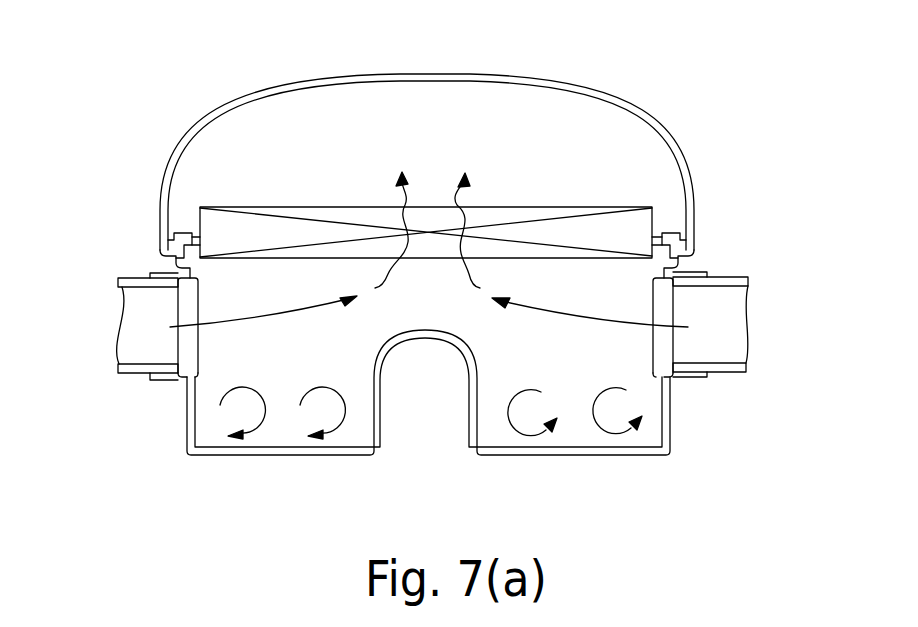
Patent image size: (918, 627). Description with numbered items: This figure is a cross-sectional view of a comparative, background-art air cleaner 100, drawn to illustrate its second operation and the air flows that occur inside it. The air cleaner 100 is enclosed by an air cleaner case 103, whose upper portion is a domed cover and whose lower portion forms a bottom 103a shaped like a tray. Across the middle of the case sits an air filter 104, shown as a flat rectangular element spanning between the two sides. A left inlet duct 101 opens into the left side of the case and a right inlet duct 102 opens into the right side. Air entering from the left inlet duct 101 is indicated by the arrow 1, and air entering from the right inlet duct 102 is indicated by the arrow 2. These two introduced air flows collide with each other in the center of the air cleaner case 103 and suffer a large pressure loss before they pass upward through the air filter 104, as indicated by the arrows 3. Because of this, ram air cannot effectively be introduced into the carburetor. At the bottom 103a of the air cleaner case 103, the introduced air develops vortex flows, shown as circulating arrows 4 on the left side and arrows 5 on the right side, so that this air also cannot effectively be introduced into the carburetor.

The air cleaner 100 is at (728, 132).
The left inlet duct 101 is at (133, 277).
The right inlet duct 102 is at (730, 277).
The air cleaner case 103 is at (481, 63).
The bottom of the air cleaner case 103a is at (266, 446).
The air filter 104 is at (265, 207).
The arrow indicating air flow from left inlet duct 1 is at (263, 310).
The arrow indicating air flow from right inlet duct 2 is at (590, 311).
The arrows indicating air flow through air filter 3 is at (427, 233).
The arrows indicating vortex flows 4 is at (287, 399).
The arrows indicating vortex flows 5 is at (567, 396).